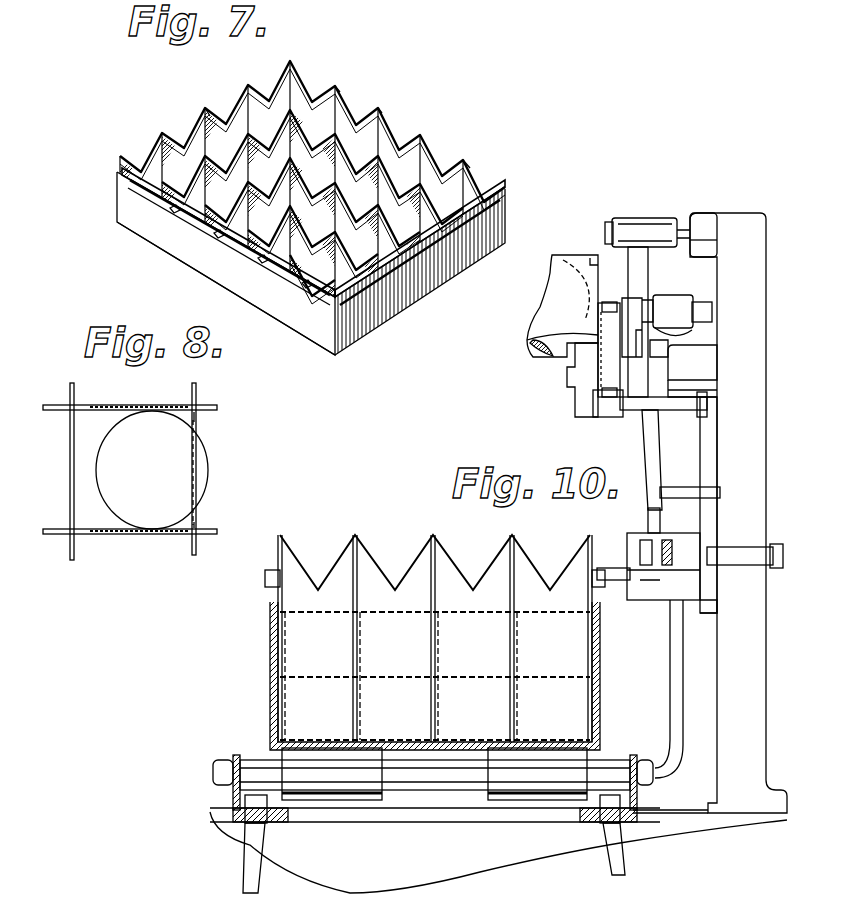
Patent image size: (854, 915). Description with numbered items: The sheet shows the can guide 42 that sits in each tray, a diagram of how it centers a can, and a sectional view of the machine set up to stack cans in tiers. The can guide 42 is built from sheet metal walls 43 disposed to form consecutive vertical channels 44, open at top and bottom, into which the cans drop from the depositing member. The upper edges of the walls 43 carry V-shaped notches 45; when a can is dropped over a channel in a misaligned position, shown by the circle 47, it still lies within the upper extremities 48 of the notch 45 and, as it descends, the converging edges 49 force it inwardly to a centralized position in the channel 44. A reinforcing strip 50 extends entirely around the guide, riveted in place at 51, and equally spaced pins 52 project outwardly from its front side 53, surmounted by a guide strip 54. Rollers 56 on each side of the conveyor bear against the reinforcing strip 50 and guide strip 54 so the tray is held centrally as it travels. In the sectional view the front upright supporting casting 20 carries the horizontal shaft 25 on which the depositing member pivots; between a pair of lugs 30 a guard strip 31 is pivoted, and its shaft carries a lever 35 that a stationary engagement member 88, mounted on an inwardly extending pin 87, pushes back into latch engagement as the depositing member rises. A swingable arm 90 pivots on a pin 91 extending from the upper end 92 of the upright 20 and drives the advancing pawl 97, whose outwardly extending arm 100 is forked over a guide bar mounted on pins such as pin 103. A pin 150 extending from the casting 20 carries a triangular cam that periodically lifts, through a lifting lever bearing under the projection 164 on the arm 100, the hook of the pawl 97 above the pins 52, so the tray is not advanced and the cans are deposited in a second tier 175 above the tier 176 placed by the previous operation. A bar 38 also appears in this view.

In FIG. 10, the upright supporting casting 20 is at (747, 425).
In FIG. 10, the horizontal shaft 25 is at (665, 352).
In FIG. 10, the lugs 30 is at (570, 360).
In FIG. 10, the guard strip 31 is at (545, 338).
In FIG. 10, the lever 35 is at (605, 370).
In FIG. 10, the bar 38 is at (685, 487).
In FIG. 7, the can guide 42 is at (371, 111).
In FIG. 7, the sheet metal walls 43 is at (296, 88).
In FIG. 8, the sheet metal walls 43 is at (66, 396).
In FIG. 7, the channels 44 is at (466, 185).
In FIG. 8, the channels 44 is at (90, 514).
In FIG. 7, the V-shaped notches 45 is at (392, 137).
In FIG. 8, the V-shaped notches 45 is at (198, 476).
In FIG. 10, the V-shaped notches 45 is at (378, 561).
In FIG. 8, the circle 47 is at (97, 466).
In FIG. 7, the upper extremities 48 is at (375, 98).
In FIG. 8, the upper extremities 48 is at (198, 423).
In FIG. 7, the converging edges 49 is at (228, 110).
In FIG. 8, the converging edges 49 is at (163, 404).
In FIG. 7, the reinforcing strip 50 is at (505, 211).
In FIG. 10, the reinforcing strip 50 is at (284, 567).
In FIG. 7, the rivets 51 is at (412, 300).
In FIG. 7, the pins 52 is at (122, 182).
In FIG. 7, the front side 53 is at (213, 273).
In FIG. 7, the guide strip 54 is at (157, 217).
In FIG. 10, the rollers 56 is at (263, 576).
In FIG. 10, the inwardly extending pin 87 is at (697, 320).
In FIG. 10, the stationary engagement member 88 is at (636, 318).
In FIG. 10, the swingable arm 90 is at (648, 441).
In FIG. 10, the pin 91 is at (683, 222).
In FIG. 10, the upper end 92 is at (700, 228).
In FIG. 10, the pawl 97 is at (642, 586).
In FIG. 10, the outwardly extending arm 100 is at (650, 537).
In FIG. 10, the pin 103 is at (706, 549).
In FIG. 10, the pin 150 is at (717, 580).
In FIG. 10, the projection 164 is at (690, 537).
In FIG. 10, the second tier 175 is at (555, 633).
In FIG. 10, the tier 176 is at (550, 705).